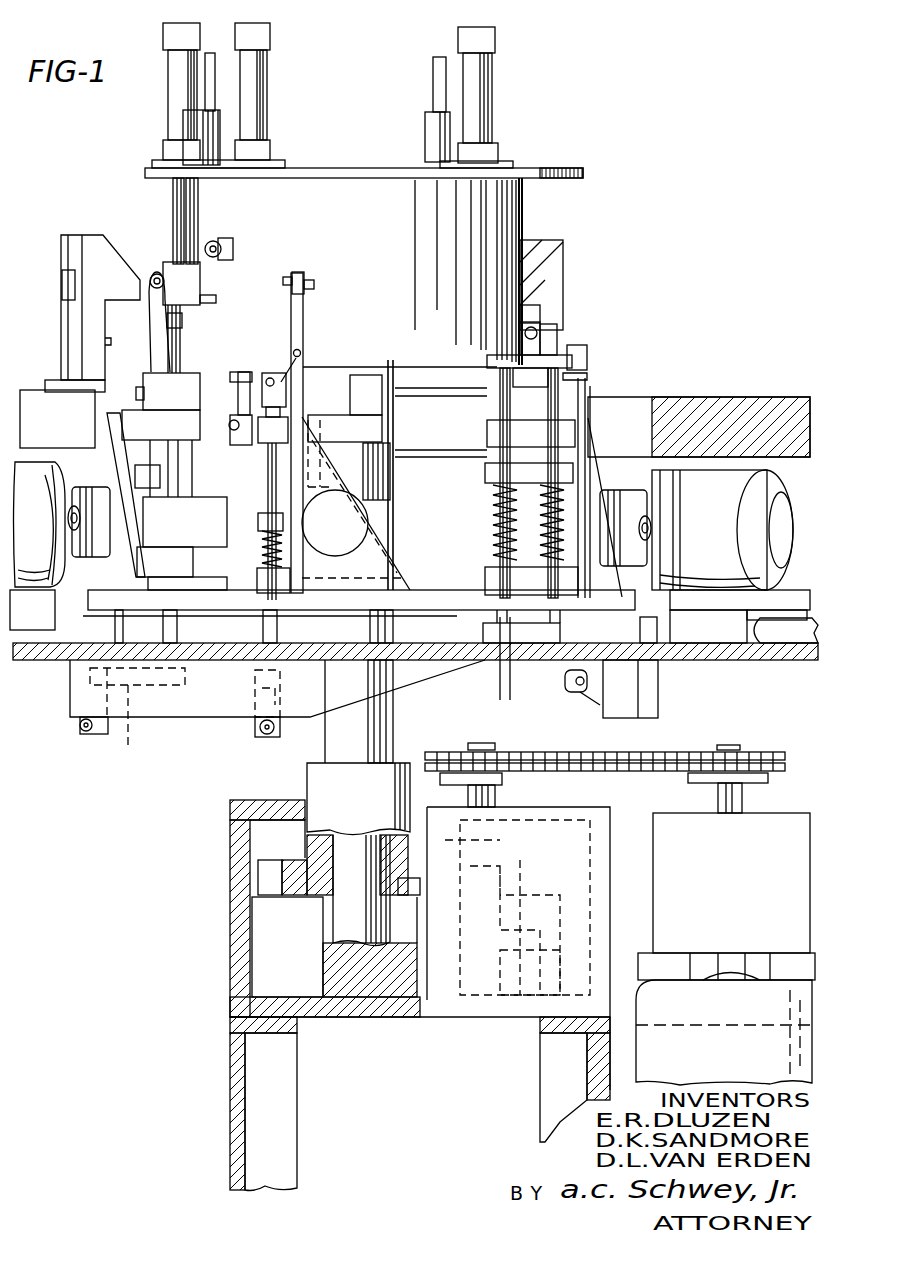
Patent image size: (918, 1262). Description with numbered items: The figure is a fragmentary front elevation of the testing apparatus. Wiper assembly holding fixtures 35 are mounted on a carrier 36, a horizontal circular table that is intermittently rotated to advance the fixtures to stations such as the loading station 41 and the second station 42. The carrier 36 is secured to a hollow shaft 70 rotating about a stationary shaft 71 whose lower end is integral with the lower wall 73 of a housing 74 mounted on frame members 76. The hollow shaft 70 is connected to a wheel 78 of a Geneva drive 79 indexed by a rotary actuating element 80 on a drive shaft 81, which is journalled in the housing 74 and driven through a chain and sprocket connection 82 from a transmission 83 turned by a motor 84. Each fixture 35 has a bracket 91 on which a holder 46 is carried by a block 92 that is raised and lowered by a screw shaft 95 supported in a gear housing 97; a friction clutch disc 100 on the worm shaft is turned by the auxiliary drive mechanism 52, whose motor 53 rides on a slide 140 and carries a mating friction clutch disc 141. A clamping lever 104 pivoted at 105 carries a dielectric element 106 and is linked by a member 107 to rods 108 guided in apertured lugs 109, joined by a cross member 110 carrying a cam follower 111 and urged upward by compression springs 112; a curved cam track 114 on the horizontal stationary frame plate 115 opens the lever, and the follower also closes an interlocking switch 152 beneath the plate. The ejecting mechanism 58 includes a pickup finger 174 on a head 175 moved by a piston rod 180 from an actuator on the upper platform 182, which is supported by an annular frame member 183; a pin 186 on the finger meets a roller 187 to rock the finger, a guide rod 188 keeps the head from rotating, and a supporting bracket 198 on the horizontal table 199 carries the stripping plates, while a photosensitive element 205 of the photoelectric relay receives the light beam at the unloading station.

The wiper assembly holding fixture 35 is at (598, 428).
The carrier 36 is at (468, 605).
The loading station 41 is at (380, 345).
The second station 42 is at (605, 380).
The holder 46 is at (372, 390).
The auxiliary drive mechanism 52 is at (35, 460).
The motor 53 is at (50, 485).
The ejecting mechanism 58 is at (272, 80).
The hollow shaft 70 is at (382, 718).
The stationary shaft 71 is at (348, 918).
The lower wall 73 is at (285, 1005).
The housing 74 is at (238, 940).
The frame member 76 is at (272, 1110).
The wheel 78 is at (268, 873).
The Geneva drive 79 is at (512, 851).
The rotary actuating element 80 is at (410, 917).
The drive shaft 81 is at (496, 792).
The chain and sprocket connection 82 is at (608, 773).
The transmission 83 is at (776, 833).
The motor 84 is at (660, 1060).
The bracket 91 is at (109, 472).
The block 92 is at (382, 432).
The screw shaft 95 is at (172, 472).
The gear housing 97 is at (390, 505).
The friction clutch disc 100 is at (118, 520).
The clamping lever 104 is at (150, 278).
The pivot 105 is at (305, 352).
The dielectric element 106 is at (298, 272).
The member 107 is at (498, 360).
The rod 108 is at (274, 493).
The apertured lug 109 is at (490, 438).
The cross member 110 is at (128, 722).
The cam follower 111 is at (88, 736).
The compression spring 112 is at (545, 542).
The curved cam track 114 is at (170, 712).
The horizontal stationary frame plate 115 is at (43, 652).
The slide 140 is at (780, 636).
The friction clutch disc 141 is at (83, 550).
The interlocking switch 152 is at (652, 697).
The pickup finger 174 is at (180, 342).
The head 175 is at (192, 276).
The piston rod 180 is at (176, 218).
The upper platform 182 is at (332, 168).
The annular frame member 183 is at (506, 212).
The pin 186 is at (212, 302).
The roller 187 is at (217, 241).
The guide rod 188 is at (212, 72).
The supporting bracket 198 is at (66, 250).
The horizontal table 199 is at (40, 390).
The photosensitive element 205 is at (232, 437).